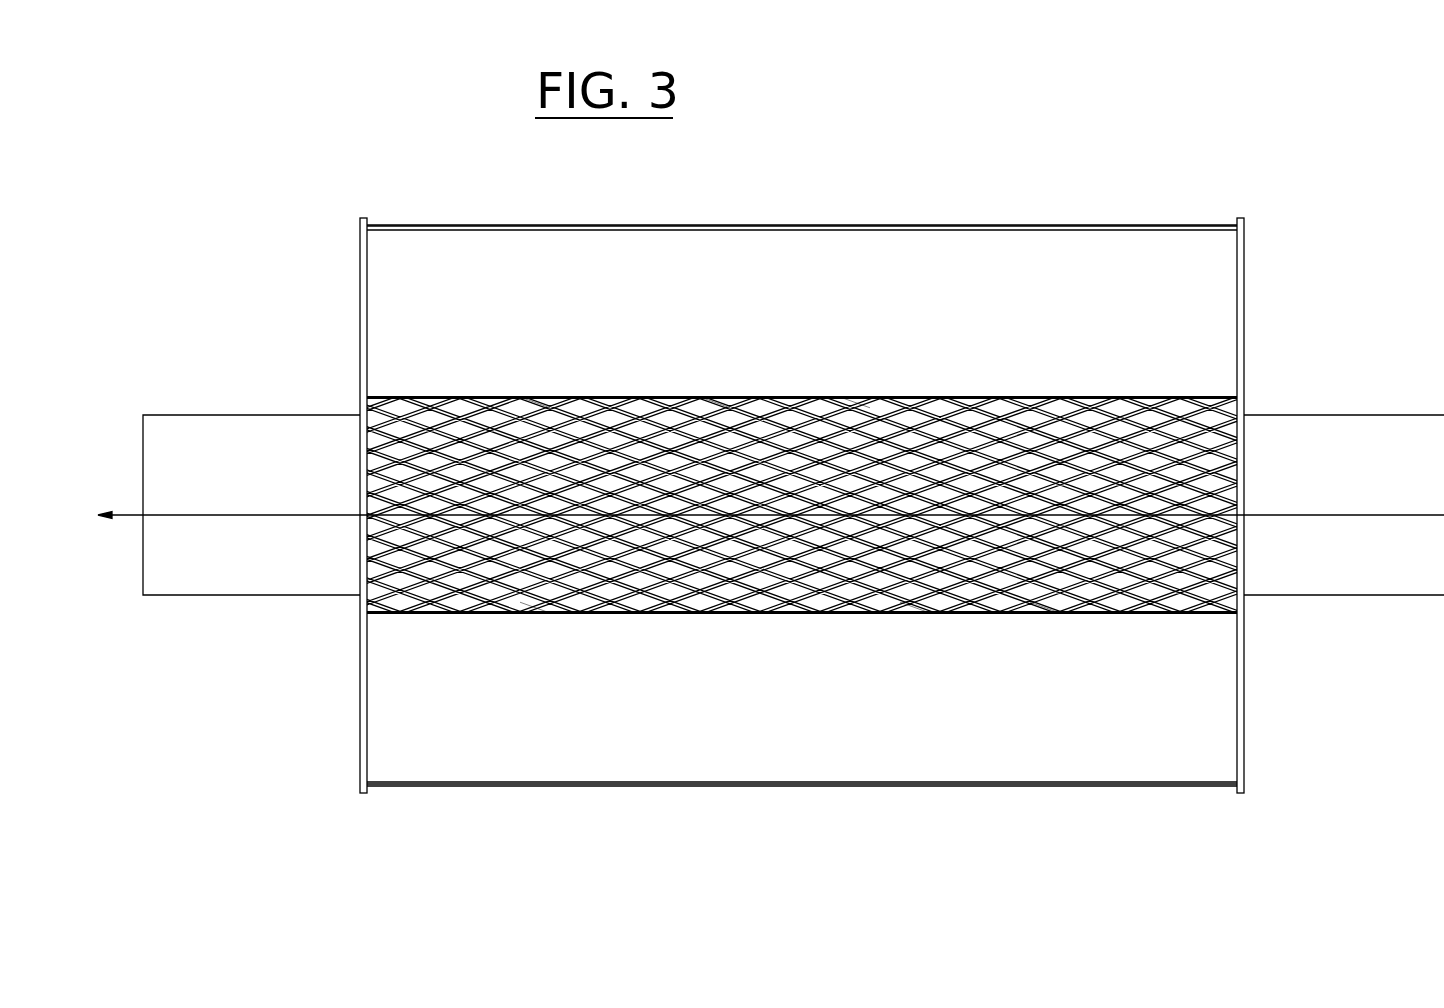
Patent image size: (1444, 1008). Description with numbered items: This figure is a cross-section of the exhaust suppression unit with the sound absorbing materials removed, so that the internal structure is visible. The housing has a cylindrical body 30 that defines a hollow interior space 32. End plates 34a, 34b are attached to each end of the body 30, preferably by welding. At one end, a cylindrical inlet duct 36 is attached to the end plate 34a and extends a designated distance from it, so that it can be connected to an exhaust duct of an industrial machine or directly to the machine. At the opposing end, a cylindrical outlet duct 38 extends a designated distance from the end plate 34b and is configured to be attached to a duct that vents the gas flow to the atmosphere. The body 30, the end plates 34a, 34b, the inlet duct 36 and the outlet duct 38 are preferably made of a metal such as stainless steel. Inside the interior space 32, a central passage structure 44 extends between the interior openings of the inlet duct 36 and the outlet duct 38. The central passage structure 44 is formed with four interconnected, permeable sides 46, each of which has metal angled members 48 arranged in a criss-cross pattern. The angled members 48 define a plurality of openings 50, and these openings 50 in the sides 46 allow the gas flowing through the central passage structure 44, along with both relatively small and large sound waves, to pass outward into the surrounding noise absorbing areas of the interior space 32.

The cylindrical body 30 is at (1099, 225).
The hollow interior space 32 is at (818, 711).
The end plate 34a is at (1247, 275).
The end plate 34b is at (360, 272).
The inlet duct 36 is at (1336, 447).
The outlet duct 38 is at (268, 463).
The central passage structure 44 is at (1034, 385).
The permeable sides 46 is at (538, 397).
The angled members 48 is at (732, 425).
The openings 50 is at (853, 408).